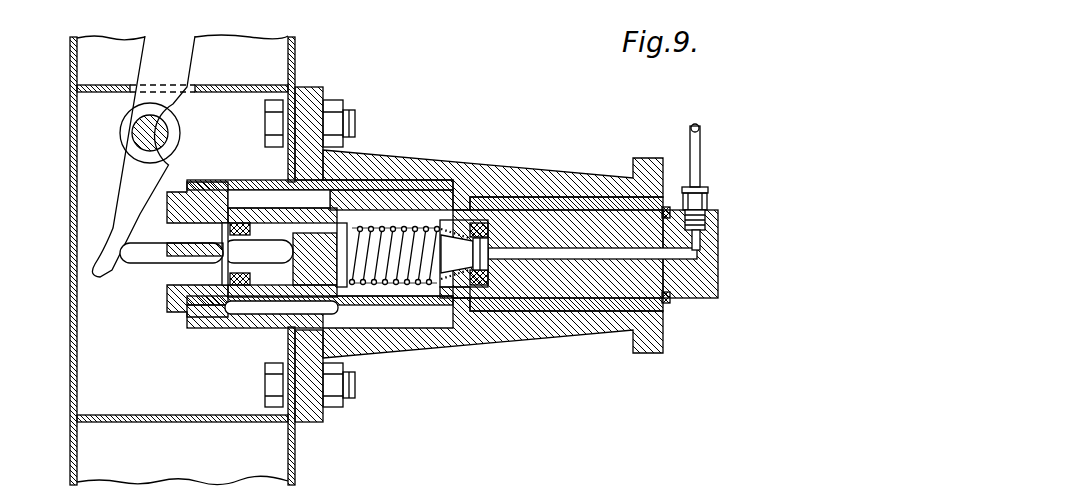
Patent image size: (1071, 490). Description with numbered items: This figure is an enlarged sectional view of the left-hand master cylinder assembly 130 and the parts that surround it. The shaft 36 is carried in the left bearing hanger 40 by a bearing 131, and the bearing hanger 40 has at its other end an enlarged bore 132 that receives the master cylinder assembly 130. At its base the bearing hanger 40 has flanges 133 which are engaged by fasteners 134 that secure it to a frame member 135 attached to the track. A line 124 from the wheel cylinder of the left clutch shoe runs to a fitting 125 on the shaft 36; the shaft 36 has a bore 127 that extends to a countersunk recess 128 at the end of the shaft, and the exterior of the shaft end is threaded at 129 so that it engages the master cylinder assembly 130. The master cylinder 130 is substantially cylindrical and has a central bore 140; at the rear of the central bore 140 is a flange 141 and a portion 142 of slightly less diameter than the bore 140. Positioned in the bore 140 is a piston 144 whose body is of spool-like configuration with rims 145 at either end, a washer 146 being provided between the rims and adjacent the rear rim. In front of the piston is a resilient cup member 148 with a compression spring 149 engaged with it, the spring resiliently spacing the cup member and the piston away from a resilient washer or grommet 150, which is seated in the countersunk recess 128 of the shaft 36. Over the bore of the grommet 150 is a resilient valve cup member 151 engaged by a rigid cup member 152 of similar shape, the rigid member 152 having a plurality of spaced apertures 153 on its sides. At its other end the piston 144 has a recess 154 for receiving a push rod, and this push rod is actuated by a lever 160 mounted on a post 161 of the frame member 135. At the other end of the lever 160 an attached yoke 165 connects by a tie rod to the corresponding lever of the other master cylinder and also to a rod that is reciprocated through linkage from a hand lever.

The shaft 36 is at (718, 292).
The left bearing hanger 40 is at (590, 171).
The line 124 is at (701, 151).
The fitting 125 is at (709, 191).
The bore 127 is at (700, 256).
The countersunk recess 128 is at (505, 320).
The threaded exterior 129 is at (465, 212).
The master cylinder assembly 130 is at (400, 178).
The bearing 131 is at (610, 200).
The enlarged bore 132 is at (441, 172).
The flanges 133 is at (311, 88).
The fasteners 134 is at (340, 101).
The frame member 135 is at (296, 48).
The central bore 140 is at (262, 302).
The flange 141 is at (200, 328).
The portion 142 is at (167, 286).
The piston 144 is at (306, 270).
The rims 145 is at (222, 209).
The washer 146 is at (233, 226).
The resilient cup member 148 is at (362, 305).
The compression spring 149 is at (354, 240).
The grommet 150 is at (490, 238).
The resilient valve cup member 151 is at (520, 300).
The rigid cup member 152 is at (426, 300).
The spaced apertures 153 is at (470, 222).
The recess 154 is at (260, 225).
The lever 160 is at (108, 176).
The post 161 is at (135, 135).
The yoke 165 is at (145, 265).